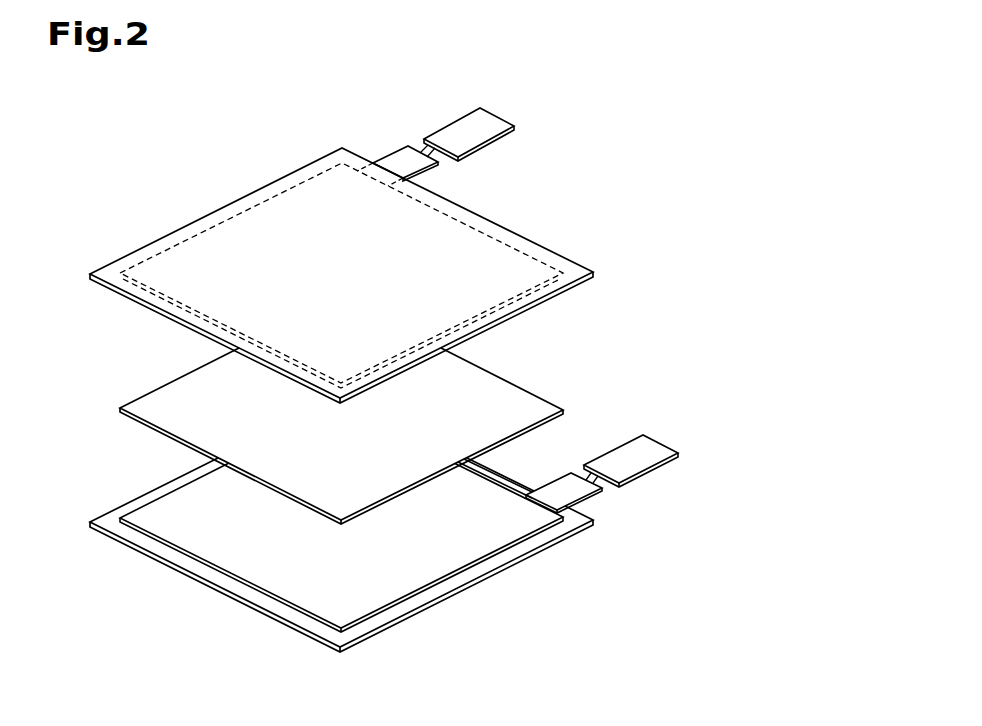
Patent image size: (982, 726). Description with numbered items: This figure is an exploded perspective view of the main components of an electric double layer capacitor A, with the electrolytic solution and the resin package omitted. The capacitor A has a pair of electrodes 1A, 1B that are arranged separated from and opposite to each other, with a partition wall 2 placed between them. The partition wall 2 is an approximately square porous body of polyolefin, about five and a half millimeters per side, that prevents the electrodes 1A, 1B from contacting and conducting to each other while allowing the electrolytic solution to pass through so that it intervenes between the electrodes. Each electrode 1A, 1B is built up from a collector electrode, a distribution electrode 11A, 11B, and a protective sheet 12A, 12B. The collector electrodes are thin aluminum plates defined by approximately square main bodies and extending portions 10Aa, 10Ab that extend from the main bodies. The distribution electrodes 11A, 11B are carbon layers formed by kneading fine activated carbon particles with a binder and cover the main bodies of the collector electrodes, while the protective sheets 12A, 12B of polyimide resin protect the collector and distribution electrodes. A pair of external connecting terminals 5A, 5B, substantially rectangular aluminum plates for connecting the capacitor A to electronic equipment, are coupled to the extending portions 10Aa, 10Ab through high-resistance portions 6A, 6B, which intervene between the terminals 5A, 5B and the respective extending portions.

The electric double layer capacitor A is at (104, 128).
The electrode 1A is at (263, 180).
The electrode 1B is at (530, 570).
The partition wall 2 is at (148, 405).
The external connecting terminal 5A is at (487, 121).
The external connecting terminal 5B is at (652, 453).
The high-resistance portion 6A is at (422, 147).
The high-resistance portion 6B is at (597, 483).
The extending portion 10Aa is at (400, 157).
The lower electrode tab 10Ab is at (578, 495).
The distribution electrode 11A is at (227, 223).
The distribution electrode 11B is at (449, 569).
The protective sheet 12A is at (164, 244).
The protective sheet 12B is at (396, 613).